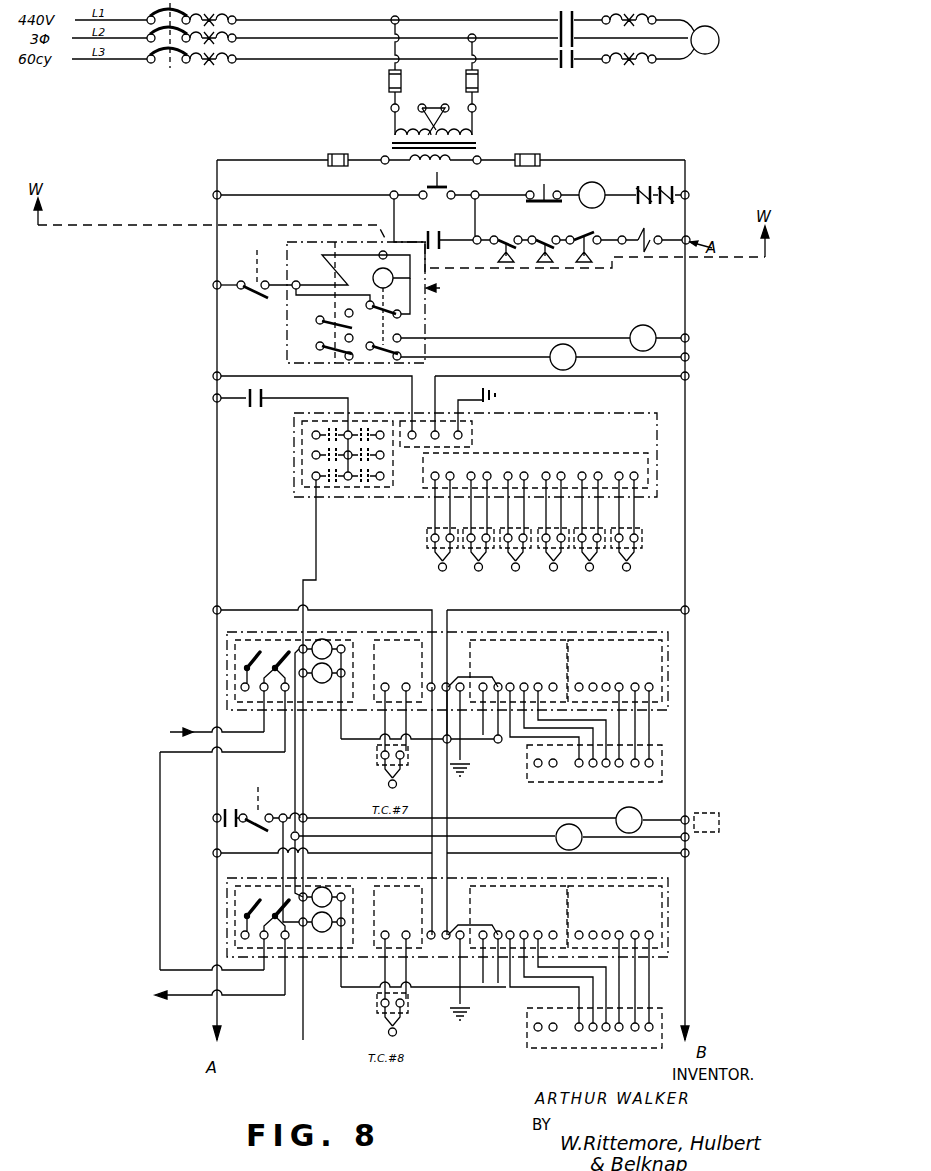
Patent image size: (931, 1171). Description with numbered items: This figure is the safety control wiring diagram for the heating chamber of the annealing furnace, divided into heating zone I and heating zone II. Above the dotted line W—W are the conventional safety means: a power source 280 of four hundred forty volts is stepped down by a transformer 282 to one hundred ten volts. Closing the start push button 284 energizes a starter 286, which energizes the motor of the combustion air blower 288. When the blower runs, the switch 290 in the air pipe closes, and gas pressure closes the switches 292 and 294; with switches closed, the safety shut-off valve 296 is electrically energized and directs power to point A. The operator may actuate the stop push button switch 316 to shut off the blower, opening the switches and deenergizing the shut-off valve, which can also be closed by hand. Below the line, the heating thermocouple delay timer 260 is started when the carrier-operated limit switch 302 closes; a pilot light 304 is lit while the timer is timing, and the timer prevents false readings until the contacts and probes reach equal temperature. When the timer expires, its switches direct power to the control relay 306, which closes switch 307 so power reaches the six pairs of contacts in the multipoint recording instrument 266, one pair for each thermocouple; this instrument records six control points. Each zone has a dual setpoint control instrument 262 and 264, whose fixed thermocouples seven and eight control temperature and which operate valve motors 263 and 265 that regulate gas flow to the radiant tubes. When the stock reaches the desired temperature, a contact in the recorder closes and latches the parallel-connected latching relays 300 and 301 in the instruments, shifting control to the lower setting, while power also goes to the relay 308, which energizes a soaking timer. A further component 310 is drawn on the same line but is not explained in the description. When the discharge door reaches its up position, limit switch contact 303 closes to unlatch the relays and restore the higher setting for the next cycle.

The power source 280 is at (133, 72).
The transformer 282 is at (488, 138).
The start push button 284 is at (426, 186).
The starter 286 is at (600, 190).
The combustion air blower 288 is at (710, 54).
The switch 290 is at (504, 232).
The switch 292 is at (548, 232).
The switch 294 is at (588, 230).
The safety shut-off valve 296 is at (648, 236).
The latching relay 300 is at (232, 661).
The latching relay 301 is at (231, 921).
The limit switch 302 is at (250, 291).
The limit switch contact 303 is at (258, 826).
The pilot light 304 is at (570, 350).
The control relay 306 is at (648, 326).
The switch 307 is at (248, 402).
The relay 308 is at (577, 848).
The relay coil 310 is at (640, 811).
The stop push button switch 316 is at (532, 199).
The heating T.C. delay timer 260 is at (425, 318).
The dual setpoint proportioning control instrument 262 is at (668, 641).
The valve motor 263 is at (662, 763).
The dual setpoint proportioning control instrument 264 is at (668, 947).
The valve motor 265 is at (662, 1027).
The multipoint recording instrument 266 is at (657, 420).